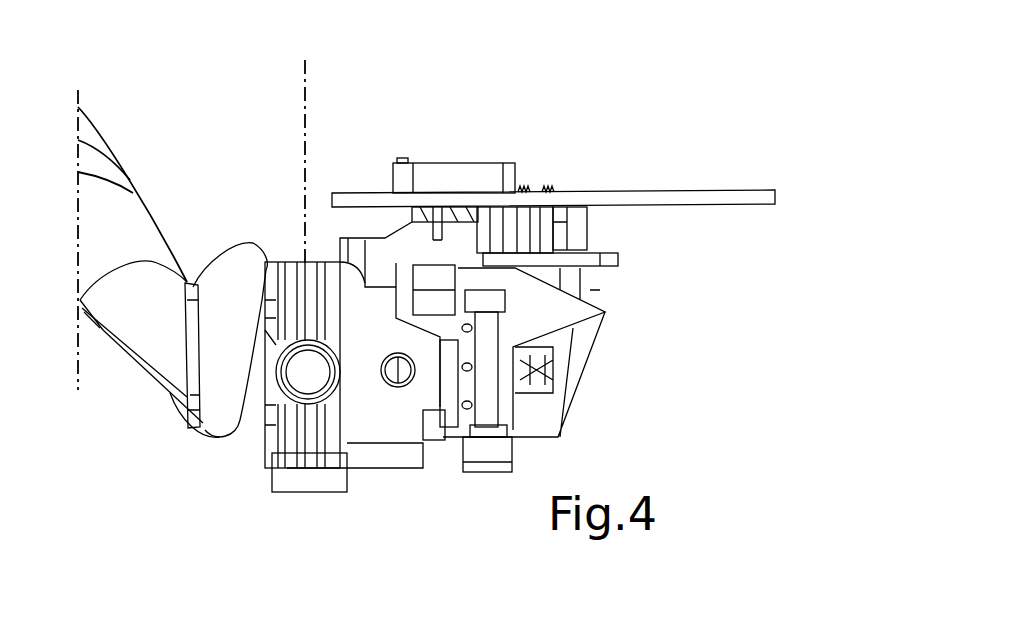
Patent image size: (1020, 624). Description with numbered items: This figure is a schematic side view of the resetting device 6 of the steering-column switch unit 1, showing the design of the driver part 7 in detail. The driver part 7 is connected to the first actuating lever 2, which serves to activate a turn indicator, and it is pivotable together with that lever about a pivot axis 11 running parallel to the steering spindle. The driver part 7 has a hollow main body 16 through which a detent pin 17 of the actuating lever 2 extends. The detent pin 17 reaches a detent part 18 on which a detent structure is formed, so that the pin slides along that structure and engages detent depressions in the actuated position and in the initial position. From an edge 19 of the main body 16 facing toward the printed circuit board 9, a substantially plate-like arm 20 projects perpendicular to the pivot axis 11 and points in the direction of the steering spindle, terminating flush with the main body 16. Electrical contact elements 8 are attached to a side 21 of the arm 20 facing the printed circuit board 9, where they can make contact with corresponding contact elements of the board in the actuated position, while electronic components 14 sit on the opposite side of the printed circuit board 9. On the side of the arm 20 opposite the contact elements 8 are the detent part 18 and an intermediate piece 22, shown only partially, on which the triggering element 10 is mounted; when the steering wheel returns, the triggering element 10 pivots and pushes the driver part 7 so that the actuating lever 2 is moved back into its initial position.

The steering-column switch unit 1 is at (645, 58).
The first actuating lever 2 is at (117, 197).
The resetting device 6 is at (262, 162).
The driver part 7 is at (375, 447).
The electrical contact elements 8 is at (556, 192).
The printed circuit board 9 is at (718, 195).
The triggering element 10 is at (618, 258).
The pivot axis 11 is at (303, 92).
The electronic components 14 is at (484, 177).
The main body 16 is at (350, 420).
The detent pin 17 is at (275, 340).
The detent part 18 is at (538, 320).
The edge 19 is at (380, 257).
The arm 20 is at (456, 243).
The side 21 is at (438, 198).
The intermediate piece 22 is at (590, 292).